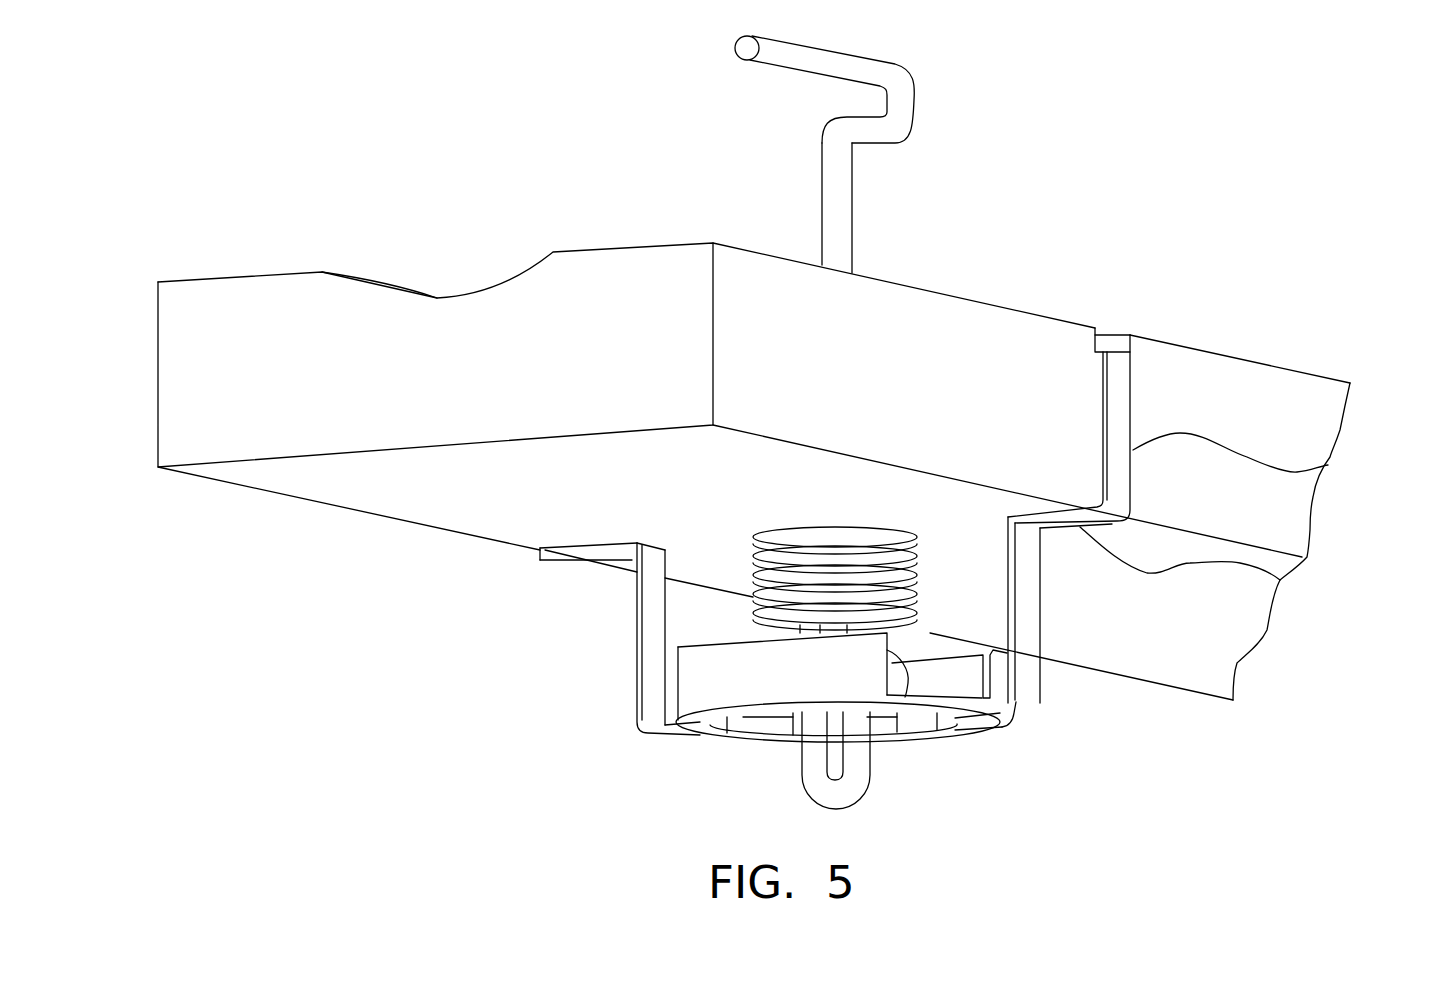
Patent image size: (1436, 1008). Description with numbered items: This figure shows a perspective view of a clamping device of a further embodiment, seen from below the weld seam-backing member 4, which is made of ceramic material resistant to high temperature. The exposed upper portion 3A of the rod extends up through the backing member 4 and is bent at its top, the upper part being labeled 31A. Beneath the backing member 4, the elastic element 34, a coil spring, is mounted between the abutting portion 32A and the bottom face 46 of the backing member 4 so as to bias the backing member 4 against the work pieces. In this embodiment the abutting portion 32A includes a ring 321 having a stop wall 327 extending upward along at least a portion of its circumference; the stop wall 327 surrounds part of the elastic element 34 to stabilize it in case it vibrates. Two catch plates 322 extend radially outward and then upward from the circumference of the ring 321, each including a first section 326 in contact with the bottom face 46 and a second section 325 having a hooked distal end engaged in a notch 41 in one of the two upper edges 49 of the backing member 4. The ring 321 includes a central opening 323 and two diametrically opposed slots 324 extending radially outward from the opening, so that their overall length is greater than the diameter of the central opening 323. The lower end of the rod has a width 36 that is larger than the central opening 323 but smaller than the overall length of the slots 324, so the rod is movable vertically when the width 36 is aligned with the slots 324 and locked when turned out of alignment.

The weld seam-backing member 4 is at (240, 276).
The bottom face 46 is at (390, 490).
The upper edges 49 is at (1268, 365).
The notch 41 is at (1108, 338).
The upper portion 3A is at (870, 223).
The bent end of fixing rod 31A is at (917, 100).
The abutting portion 32A is at (1045, 725).
The catch plates 322 is at (628, 602).
The ring 321 is at (720, 737).
The second section 325 is at (1313, 473).
The first section 326 is at (1280, 580).
The stop wall 327 is at (700, 684).
The slots 324 is at (940, 720).
The central opening 323 is at (793, 737).
The width 36 is at (863, 803).
The elastic element 34 is at (920, 571).